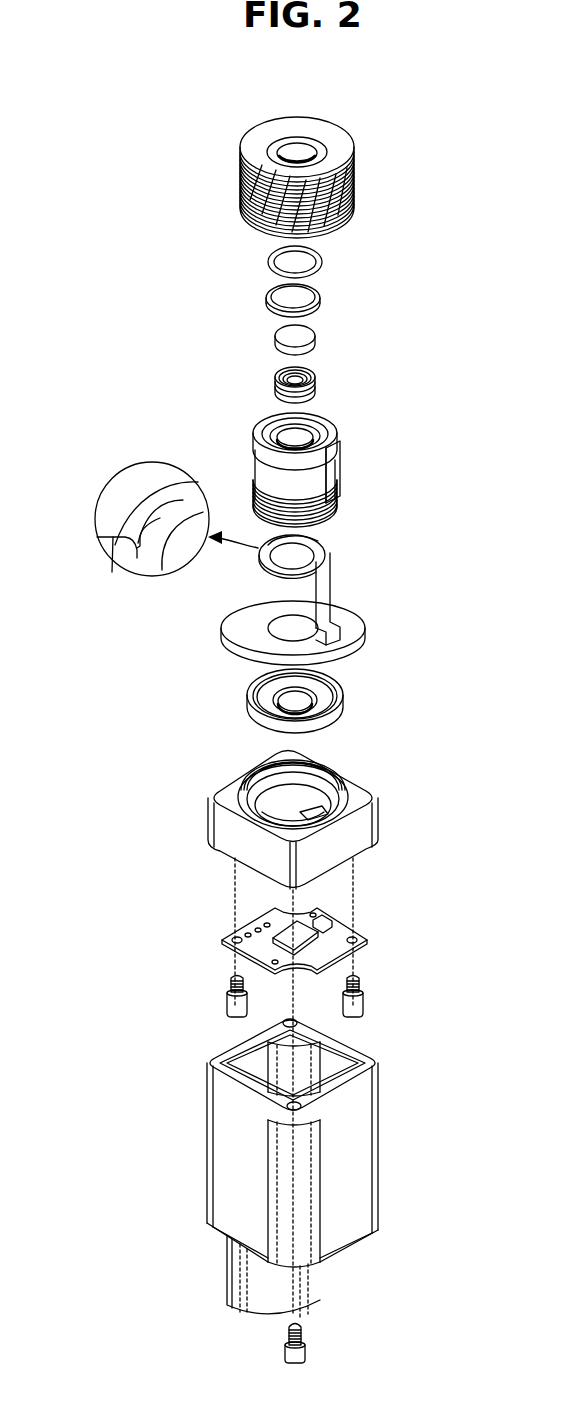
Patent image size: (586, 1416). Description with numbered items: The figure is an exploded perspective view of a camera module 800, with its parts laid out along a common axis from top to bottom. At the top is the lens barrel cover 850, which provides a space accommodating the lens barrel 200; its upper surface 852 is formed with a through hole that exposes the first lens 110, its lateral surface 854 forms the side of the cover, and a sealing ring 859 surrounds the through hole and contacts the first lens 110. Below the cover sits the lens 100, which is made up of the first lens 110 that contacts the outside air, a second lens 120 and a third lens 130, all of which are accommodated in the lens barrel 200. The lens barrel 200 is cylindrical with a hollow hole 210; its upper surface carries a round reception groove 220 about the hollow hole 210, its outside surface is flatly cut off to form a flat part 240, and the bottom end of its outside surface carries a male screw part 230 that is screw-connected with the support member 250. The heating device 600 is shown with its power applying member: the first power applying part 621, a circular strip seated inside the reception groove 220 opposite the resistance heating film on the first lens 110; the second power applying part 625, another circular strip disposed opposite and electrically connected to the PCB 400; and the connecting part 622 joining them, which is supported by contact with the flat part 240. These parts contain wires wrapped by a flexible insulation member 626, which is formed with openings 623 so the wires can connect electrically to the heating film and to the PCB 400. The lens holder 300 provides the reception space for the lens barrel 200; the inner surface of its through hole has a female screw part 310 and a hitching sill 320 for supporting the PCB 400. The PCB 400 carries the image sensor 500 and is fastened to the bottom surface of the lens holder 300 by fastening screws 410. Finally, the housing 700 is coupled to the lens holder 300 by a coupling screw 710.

The camera module 800 is at (165, 172).
The lens barrel cover 850 is at (330, 172).
The upper surface 852 is at (263, 135).
The lateral surface 854 is at (352, 188).
The sealing ring 859 is at (321, 263).
The lens 100 is at (366, 343).
The first lens 110 is at (330, 302).
The second lens 120 is at (330, 342).
The third lens 130 is at (330, 379).
The lens barrel 200 is at (330, 464).
The hollow hole 210 is at (307, 439).
The reception groove 220 is at (268, 437).
The male screw part 230 is at (252, 492).
The flat part 240 is at (323, 483).
The heating device 600 is at (331, 588).
The first power applying part 621 is at (148, 505).
The connecting part 622 is at (328, 588).
The openings 623 is at (98, 537).
The second power applying part 625 is at (258, 637).
The flexible insulation member 626 is at (300, 542).
The support member 250 is at (357, 697).
The lens holder 300 is at (353, 810).
The female screw part 310 is at (232, 773).
The hitching sill 320 is at (313, 813).
The PCB 400 is at (240, 933).
The fastening screw 410 is at (230, 1005).
The image sensor 500 is at (283, 933).
The housing 700 is at (397, 1154).
The coupling screw 710 is at (305, 1342).